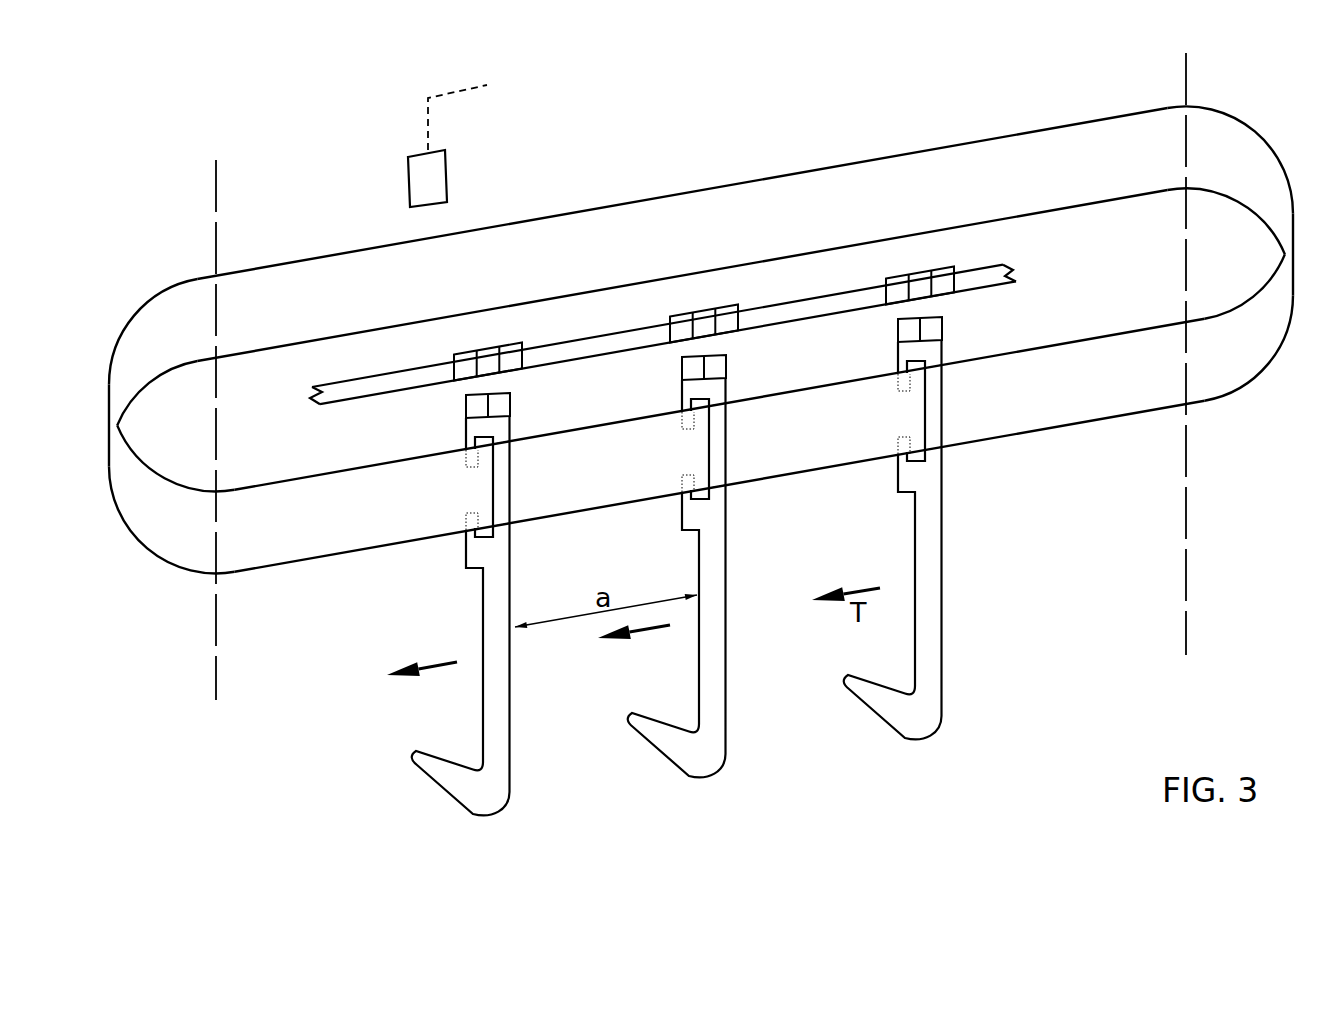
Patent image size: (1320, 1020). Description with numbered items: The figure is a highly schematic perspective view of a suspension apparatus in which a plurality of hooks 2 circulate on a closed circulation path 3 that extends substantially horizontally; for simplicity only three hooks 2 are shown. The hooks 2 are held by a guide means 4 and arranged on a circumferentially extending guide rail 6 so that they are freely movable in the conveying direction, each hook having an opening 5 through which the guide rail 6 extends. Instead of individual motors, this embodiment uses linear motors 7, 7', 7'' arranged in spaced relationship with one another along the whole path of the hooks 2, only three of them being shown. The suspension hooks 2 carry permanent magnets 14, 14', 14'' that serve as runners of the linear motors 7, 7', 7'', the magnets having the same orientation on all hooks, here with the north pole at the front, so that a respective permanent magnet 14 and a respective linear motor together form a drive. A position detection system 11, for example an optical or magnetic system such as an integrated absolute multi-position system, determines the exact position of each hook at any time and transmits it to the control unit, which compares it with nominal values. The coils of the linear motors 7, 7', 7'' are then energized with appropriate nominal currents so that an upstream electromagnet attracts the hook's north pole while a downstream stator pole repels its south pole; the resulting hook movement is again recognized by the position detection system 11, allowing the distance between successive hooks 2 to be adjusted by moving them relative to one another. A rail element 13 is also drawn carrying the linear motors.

The hook 2 is at (510, 800).
The circulation path 3 is at (1279, 141).
The guide means 4 is at (461, 546).
The opening 5 is at (926, 461).
The guide rail 6 is at (1096, 360).
The linear motor 7 is at (488, 312).
The linear motor 7' is at (708, 274).
The linear motor 7'' is at (928, 236).
The position detection system 11 is at (408, 186).
The guide rail 13 is at (1004, 262).
The permanent magnet 14 is at (528, 401).
The permanent magnet 14' is at (748, 363).
The permanent magnet 14'' is at (967, 325).